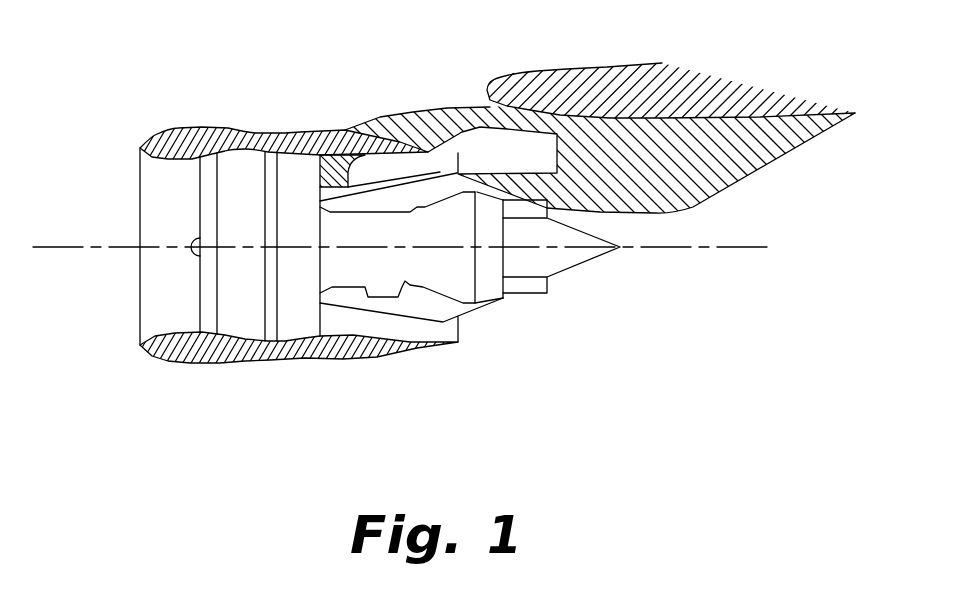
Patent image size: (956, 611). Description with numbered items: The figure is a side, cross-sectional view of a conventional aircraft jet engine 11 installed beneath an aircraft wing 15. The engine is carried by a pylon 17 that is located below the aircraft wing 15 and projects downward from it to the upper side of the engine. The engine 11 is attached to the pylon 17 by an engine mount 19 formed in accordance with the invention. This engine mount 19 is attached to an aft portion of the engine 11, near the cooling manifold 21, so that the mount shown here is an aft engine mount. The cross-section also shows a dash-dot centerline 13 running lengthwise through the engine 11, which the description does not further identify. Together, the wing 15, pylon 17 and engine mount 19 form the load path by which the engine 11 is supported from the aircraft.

The aircraft jet engine 11 is at (195, 116).
The engine centerline 13 is at (50, 243).
The aircraft wing 15 is at (537, 72).
The pylon 17 is at (760, 170).
The engine mount 19 is at (495, 198).
The cooling manifold 21 is at (488, 285).